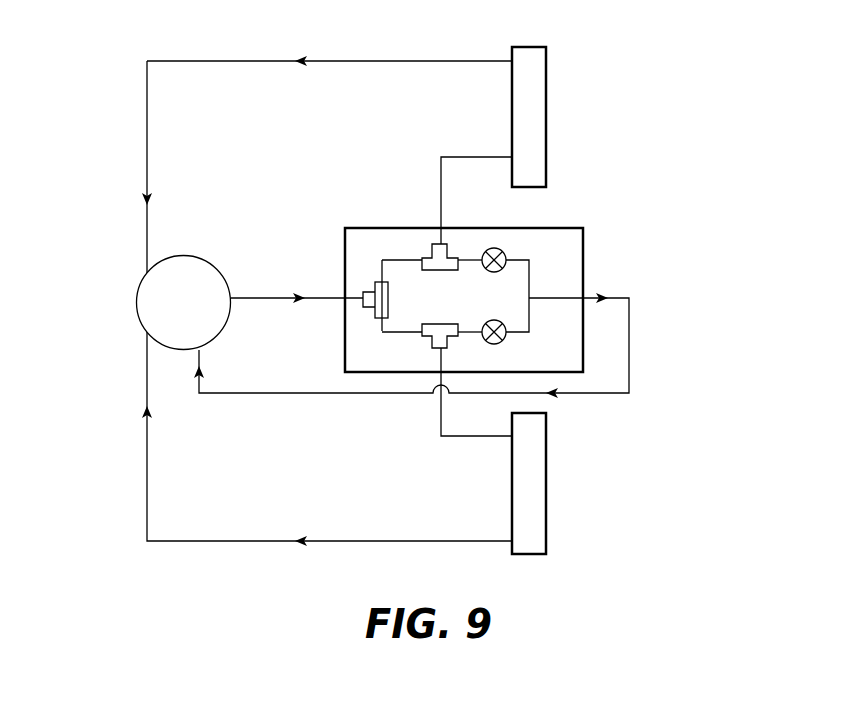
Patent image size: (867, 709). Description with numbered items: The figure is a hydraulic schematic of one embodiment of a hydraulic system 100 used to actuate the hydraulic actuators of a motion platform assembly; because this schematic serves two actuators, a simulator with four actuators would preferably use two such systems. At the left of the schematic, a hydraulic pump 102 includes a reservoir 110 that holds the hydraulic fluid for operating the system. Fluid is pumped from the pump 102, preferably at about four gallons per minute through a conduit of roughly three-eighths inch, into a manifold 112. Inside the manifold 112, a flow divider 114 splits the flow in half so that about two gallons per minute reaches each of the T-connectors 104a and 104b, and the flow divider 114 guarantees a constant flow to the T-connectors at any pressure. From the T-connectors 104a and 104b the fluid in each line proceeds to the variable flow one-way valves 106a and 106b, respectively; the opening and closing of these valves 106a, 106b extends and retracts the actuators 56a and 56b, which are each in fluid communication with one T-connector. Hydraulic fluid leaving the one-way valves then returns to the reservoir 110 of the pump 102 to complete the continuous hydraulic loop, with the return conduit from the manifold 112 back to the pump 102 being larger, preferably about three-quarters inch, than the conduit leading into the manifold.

The hydraulic system 100 is at (146, 29).
The hydraulic pump 102 is at (137, 308).
The reservoir 110 is at (183, 308).
The actuator 56a is at (633, 102).
The actuator 56b is at (633, 452).
The manifold 112 is at (565, 228).
The flow divider 114 is at (375, 298).
The T-connector 104a is at (447, 251).
The T-connector 104b is at (436, 341).
The variable flow one-way valve 106a is at (506, 256).
The variable flow one-way valve 106b is at (497, 344).